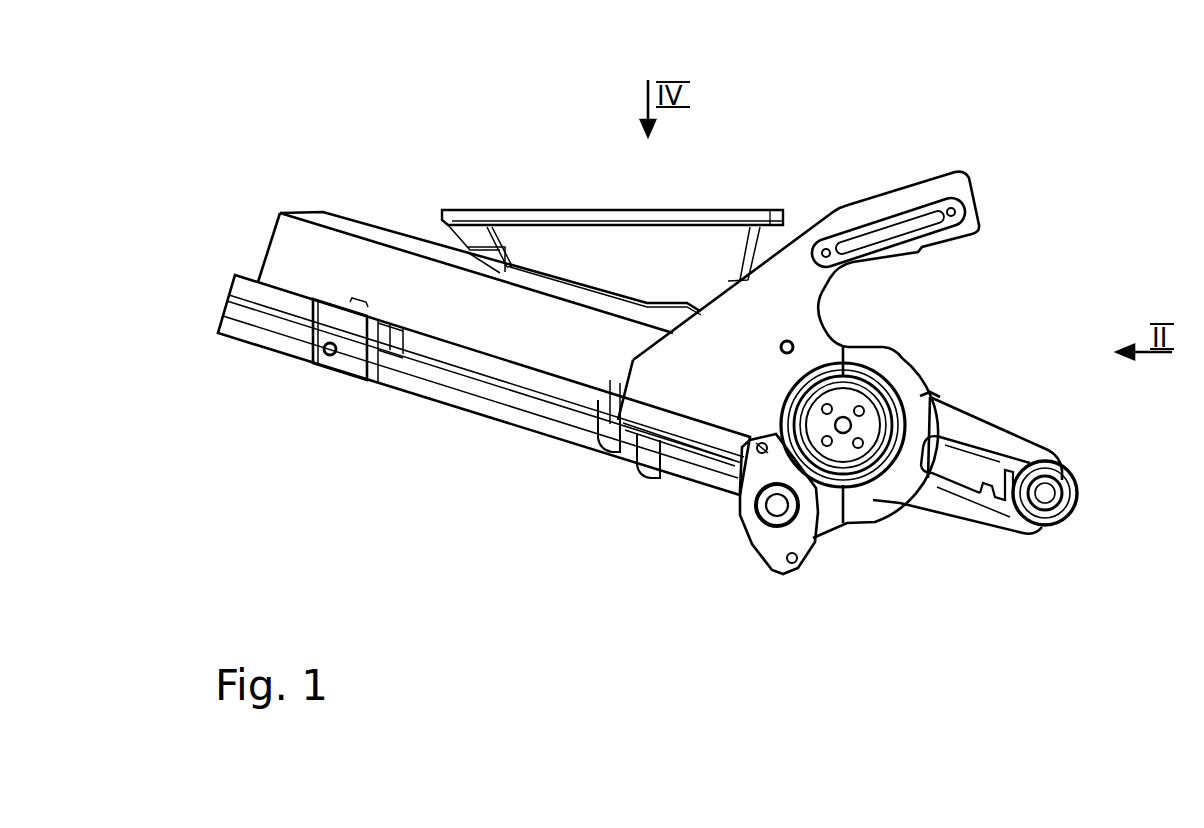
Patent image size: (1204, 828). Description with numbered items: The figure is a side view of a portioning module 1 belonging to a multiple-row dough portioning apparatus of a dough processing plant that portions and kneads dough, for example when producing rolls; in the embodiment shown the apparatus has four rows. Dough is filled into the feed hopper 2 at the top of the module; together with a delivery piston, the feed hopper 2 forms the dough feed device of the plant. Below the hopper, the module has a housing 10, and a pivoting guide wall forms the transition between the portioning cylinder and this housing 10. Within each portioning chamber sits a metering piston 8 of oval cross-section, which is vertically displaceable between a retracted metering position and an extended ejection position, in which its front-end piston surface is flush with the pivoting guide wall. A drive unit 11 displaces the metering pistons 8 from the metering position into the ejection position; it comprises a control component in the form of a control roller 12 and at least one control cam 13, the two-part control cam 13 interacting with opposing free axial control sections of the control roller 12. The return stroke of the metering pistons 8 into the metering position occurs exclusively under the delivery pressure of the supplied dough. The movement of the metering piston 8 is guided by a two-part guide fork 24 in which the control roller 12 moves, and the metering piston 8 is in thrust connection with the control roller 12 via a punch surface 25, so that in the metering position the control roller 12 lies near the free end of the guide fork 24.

The portioning module 1 is at (785, 122).
The feed hopper 2 is at (582, 222).
The metering piston 8 is at (960, 492).
The housing 10 is at (650, 482).
The drive unit 11 is at (1088, 483).
The control roller 12 is at (1077, 495).
The control cam 13 is at (914, 200).
The guide fork 24 is at (1012, 437).
The punch surface 25 is at (1010, 517).